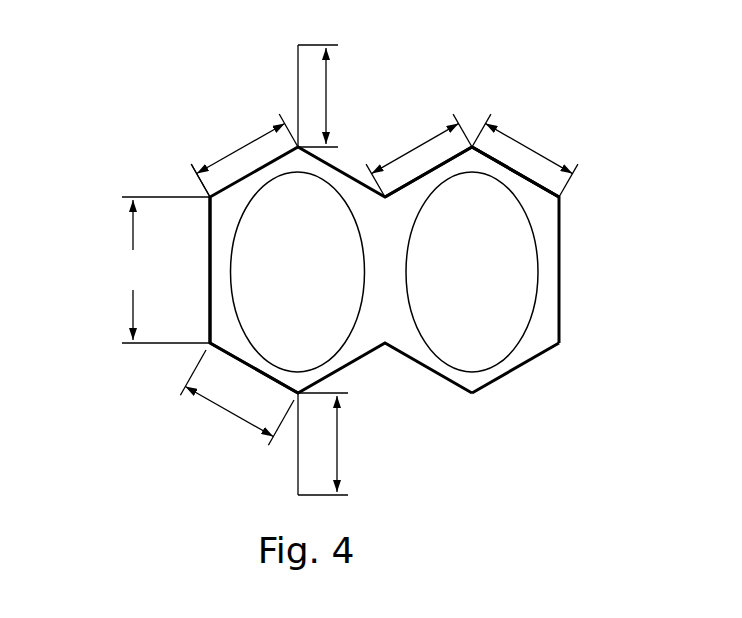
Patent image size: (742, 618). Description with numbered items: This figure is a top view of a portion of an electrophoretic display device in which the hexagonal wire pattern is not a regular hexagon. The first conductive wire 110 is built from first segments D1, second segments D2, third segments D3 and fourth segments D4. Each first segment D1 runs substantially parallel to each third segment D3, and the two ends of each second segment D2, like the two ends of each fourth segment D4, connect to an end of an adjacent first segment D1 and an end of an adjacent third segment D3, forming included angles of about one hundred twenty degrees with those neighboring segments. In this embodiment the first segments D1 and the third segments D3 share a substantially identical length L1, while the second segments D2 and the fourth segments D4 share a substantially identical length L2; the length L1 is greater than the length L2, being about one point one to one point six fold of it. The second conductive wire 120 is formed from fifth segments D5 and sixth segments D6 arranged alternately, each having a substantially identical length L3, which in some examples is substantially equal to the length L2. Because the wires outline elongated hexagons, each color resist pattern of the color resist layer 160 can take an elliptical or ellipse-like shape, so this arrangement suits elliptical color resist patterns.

The first conductive wire 110 is at (297, 53).
The second conductive wire 120 is at (557, 152).
The color resist layer 160 is at (540, 272).
The first segment D1 is at (297, 90).
The second segment D2 is at (217, 166).
The third segment D3 is at (210, 312).
The fourth segment D4 is at (237, 360).
The fifth segment D5 is at (433, 168).
The sixth segment D6 is at (488, 155).
The length of the first and third segments L1 is at (252, 270).
The length of the second and fourth segments L2 is at (239, 282).
The length of the fifth and sixth segments L3 is at (472, 151).